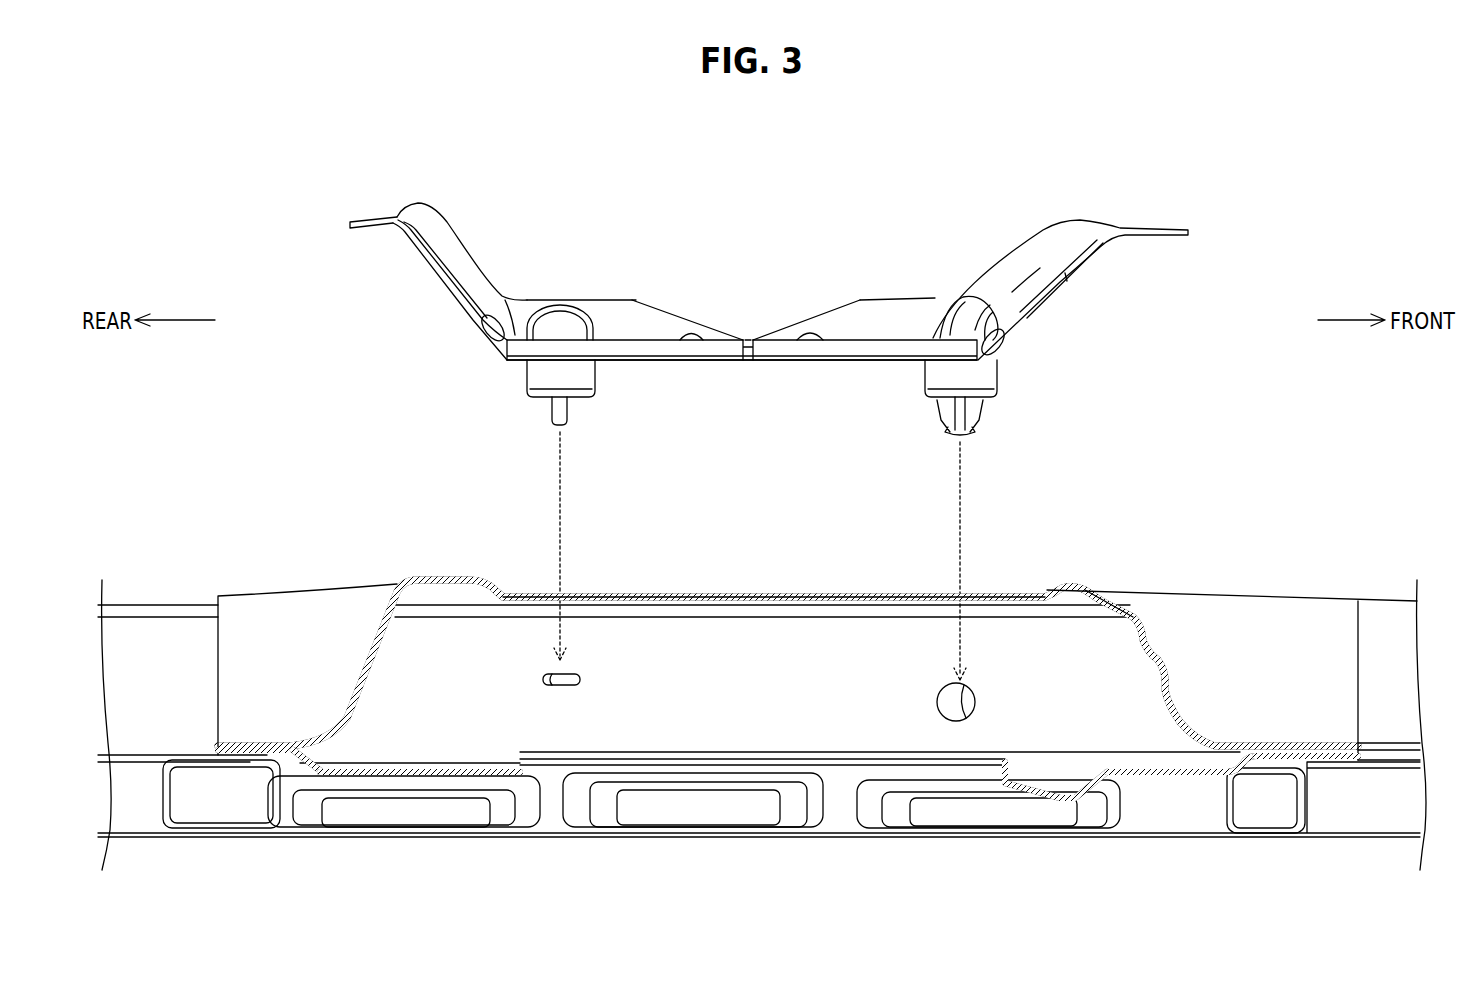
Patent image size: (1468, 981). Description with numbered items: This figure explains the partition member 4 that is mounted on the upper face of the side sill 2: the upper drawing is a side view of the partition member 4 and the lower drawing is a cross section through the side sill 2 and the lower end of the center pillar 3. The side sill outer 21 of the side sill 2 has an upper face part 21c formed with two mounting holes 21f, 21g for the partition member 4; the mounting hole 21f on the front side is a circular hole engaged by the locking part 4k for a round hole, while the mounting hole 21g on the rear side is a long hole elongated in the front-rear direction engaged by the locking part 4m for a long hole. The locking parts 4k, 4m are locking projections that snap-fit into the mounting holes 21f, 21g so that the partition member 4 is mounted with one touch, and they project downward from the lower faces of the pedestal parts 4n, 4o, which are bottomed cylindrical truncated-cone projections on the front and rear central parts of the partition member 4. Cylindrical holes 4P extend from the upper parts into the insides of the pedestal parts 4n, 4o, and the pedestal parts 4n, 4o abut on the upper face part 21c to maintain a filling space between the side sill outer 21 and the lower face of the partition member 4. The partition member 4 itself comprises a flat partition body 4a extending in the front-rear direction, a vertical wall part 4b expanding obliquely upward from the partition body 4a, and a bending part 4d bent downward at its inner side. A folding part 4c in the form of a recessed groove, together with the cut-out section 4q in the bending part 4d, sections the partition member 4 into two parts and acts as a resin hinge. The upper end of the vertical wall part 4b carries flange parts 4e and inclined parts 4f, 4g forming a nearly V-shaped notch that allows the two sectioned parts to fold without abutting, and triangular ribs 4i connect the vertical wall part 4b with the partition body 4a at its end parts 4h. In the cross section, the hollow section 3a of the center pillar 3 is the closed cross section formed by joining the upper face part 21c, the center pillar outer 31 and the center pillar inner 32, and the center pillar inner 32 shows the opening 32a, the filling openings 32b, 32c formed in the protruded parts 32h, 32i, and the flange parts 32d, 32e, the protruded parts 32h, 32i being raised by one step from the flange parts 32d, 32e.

The side sill 2 is at (186, 588).
The center pillar 3 is at (1139, 547).
The hollow section 3a is at (1082, 660).
The partition member 4 is at (822, 191).
The partition body 4a is at (790, 345).
The vertical wall part 4b is at (618, 316).
The folding part 4c is at (745, 338).
The bending part 4d is at (655, 363).
The flange parts 4e is at (405, 205).
The inclined part 4f is at (825, 322).
The inclined part 4g is at (676, 316).
The end parts 4h is at (482, 340).
The ribs 4i is at (513, 318).
The locking part for a round hole 4k is at (945, 425).
The locking part for a long hole 4m is at (566, 412).
The pedestal part 4n is at (938, 378).
The pedestal part 4o is at (582, 377).
The cylindrical holes 4P is at (558, 328).
The cut-out section 4q is at (743, 362).
The side sill outer 21 is at (128, 604).
The upper face part 21c is at (660, 672).
The mounting hole 21f is at (962, 690).
The mounting hole 21g is at (555, 672).
The center pillar outer 31 is at (1180, 590).
The center pillar inner 32 is at (783, 834).
The opening 32a is at (522, 762).
The filling opening 32b is at (1148, 800).
The filling opening 32c is at (395, 776).
The flange part 32d is at (1330, 763).
The flange part 32e is at (238, 754).
The protruded part 32h is at (1210, 778).
The protruded part 32i is at (350, 774).